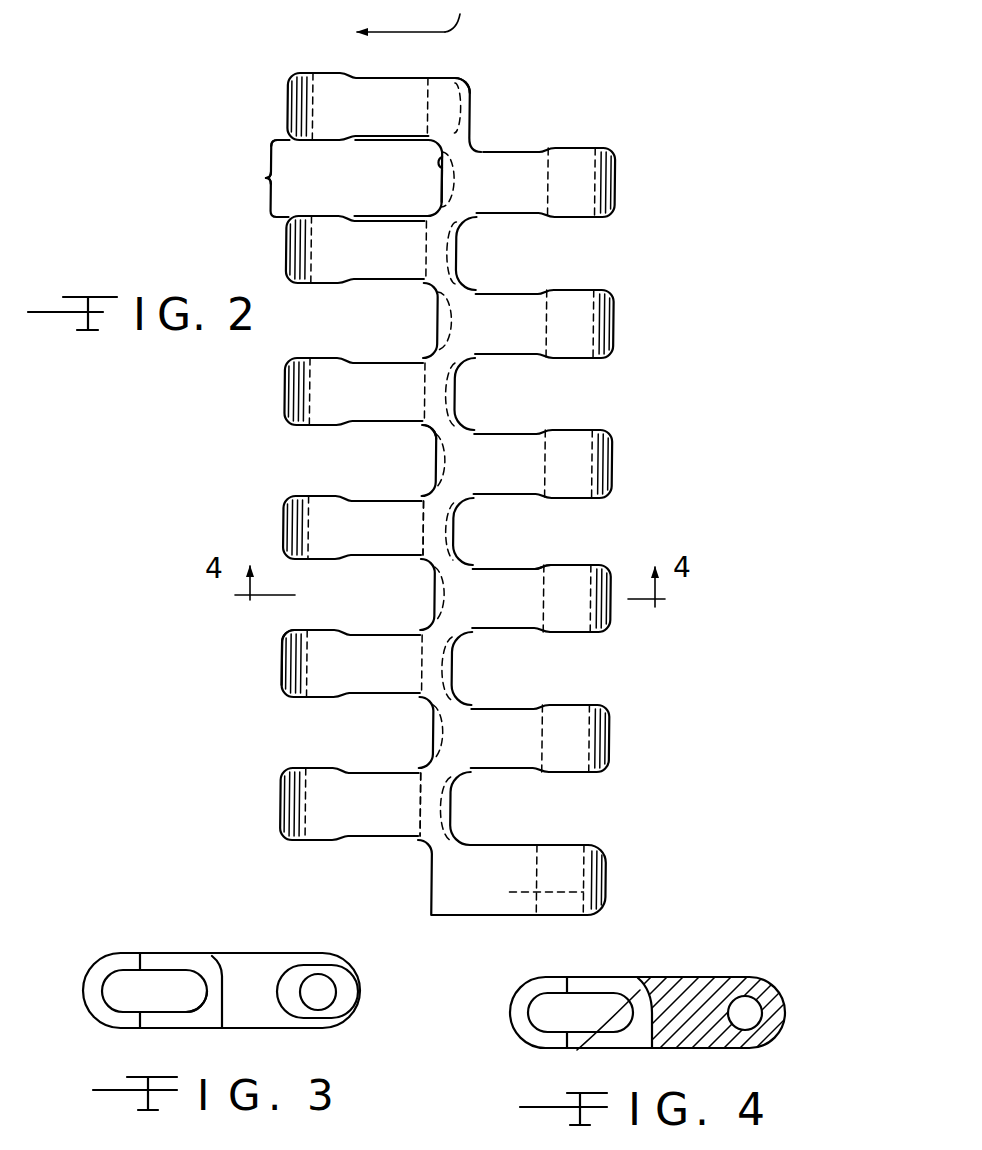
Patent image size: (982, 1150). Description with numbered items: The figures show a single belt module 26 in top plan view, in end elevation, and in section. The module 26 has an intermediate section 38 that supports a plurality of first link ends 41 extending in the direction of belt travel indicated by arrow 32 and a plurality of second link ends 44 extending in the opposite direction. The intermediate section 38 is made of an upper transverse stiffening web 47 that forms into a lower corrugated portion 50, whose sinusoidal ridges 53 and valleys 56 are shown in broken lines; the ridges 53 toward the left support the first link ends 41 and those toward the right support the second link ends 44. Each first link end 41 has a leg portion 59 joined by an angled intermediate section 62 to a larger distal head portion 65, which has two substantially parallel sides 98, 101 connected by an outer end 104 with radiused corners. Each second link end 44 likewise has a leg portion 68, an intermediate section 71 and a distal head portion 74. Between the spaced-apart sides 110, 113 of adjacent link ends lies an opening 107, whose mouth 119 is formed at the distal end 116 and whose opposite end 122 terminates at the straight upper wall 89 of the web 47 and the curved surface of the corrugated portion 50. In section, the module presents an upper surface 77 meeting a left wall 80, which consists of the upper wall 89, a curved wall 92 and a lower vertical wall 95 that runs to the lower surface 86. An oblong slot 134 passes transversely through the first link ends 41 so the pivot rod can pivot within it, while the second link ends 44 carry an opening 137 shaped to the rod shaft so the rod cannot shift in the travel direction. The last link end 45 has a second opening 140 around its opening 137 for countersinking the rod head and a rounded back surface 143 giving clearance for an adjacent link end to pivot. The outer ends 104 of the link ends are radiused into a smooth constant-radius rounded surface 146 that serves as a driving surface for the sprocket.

In FIG. 2, the belt module 26 is at (512, 60).
In FIG. 2, the arrow 32 is at (435, 16).
In FIG. 2, the intermediate section 38 is at (367, 446).
In FIG. 2, the first link ends 41 is at (380, 120).
In FIG. 2, the second link ends 44 is at (583, 202).
In FIG. 4, the second link ends 44 is at (703, 978).
In FIG. 2, the last link end 45 is at (513, 885).
In FIG. 2, the transverse stiffening web 47 is at (496, 394).
In FIG. 3, the transverse stiffening web 47 is at (228, 958).
In FIG. 2, the corrugated portion 50 is at (441, 461).
In FIG. 2, the ridges 53 is at (446, 672).
In FIG. 2, the valleys 56 is at (456, 461).
In FIG. 2, the leg portion 59 is at (385, 708).
In FIG. 2, the intermediate section 62 is at (369, 525).
In FIG. 2, the distal head portion 65 is at (238, 654).
In FIG. 2, the leg portion 68 is at (538, 545).
In FIG. 2, the intermediate section 71 is at (606, 540).
In FIG. 2, the distal head portion 74 is at (611, 642).
In FIG. 4, the upper surface 77 is at (662, 935).
In FIG. 4, the left wall 80 is at (572, 959).
In FIG. 4, the lower surface 86 is at (668, 1066).
In FIG. 2, the upper wall 89 is at (438, 457).
In FIG. 4, the upper wall 89 is at (621, 954).
In FIG. 4, the curved wall 92 is at (553, 1037).
In FIG. 4, the lower vertical wall 95 is at (598, 1066).
In FIG. 2, the side 98 is at (251, 619).
In FIG. 2, the side 101 is at (263, 615).
In FIG. 2, the outer end 104 is at (246, 602).
In FIG. 2, the opening 107 is at (307, 180).
In FIG. 2, the side 110 is at (394, 158).
In FIG. 2, the side 113 is at (375, 195).
In FIG. 2, the distal end 116 is at (205, 134).
In FIG. 2, the mouth 119 is at (216, 157).
In FIG. 2, the opposite end 122 is at (409, 212).
In FIG. 3, the slot 134 is at (154, 958).
In FIG. 4, the slot 134 is at (534, 1016).
In FIG. 3, the opening 137 is at (345, 965).
In FIG. 4, the opening 137 is at (790, 984).
In FIG. 2, the second opening 140 is at (508, 922).
In FIG. 3, the second opening 140 is at (280, 1017).
In FIG. 3, the rounded surface 143 is at (152, 1030).
In FIG. 3, the rounded surface 146 is at (211, 994).
In FIG. 4, the rounded surface 146 is at (653, 1005).